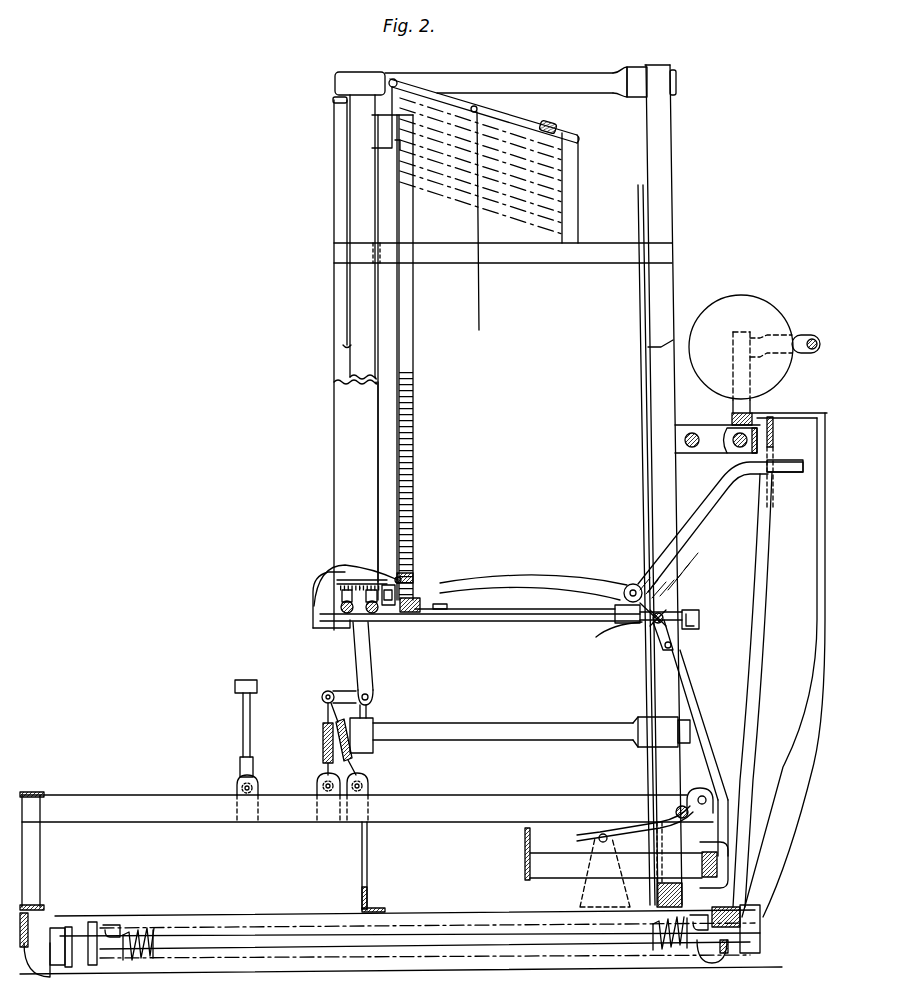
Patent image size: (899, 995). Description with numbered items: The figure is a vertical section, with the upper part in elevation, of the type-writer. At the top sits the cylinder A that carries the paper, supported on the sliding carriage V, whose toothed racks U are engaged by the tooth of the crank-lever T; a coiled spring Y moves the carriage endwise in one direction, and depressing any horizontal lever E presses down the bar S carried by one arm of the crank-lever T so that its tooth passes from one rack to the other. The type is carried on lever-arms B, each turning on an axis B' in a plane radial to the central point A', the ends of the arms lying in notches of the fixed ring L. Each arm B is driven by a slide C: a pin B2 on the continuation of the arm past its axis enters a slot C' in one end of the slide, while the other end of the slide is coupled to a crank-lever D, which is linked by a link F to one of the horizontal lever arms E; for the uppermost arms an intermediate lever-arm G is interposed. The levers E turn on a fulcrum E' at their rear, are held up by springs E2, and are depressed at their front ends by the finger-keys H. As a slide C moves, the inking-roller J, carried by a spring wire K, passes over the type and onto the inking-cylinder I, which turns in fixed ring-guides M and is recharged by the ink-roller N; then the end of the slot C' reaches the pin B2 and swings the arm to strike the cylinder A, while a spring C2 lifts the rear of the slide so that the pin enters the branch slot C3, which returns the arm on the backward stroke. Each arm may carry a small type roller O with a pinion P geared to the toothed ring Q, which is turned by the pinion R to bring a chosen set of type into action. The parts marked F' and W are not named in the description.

The cylinder A is at (754, 354).
The central point A' is at (536, 485).
The lever-arm B is at (533, 587).
The axis B' is at (711, 531).
The pin B2 is at (656, 628).
The slide C is at (649, 625).
The slot C' is at (672, 609).
The spring C2 is at (604, 634).
The branch slot C3 is at (680, 635).
The crank-lever D is at (392, 148).
The horizontal lever arm E is at (401, 884).
The fulcrum E' is at (700, 753).
The spring E2 is at (521, 812).
The link F is at (320, 762).
The inclined rod F' is at (349, 762).
The intermediate lever-arm G is at (484, 161).
The finger-key H is at (246, 739).
The inking-cylinder I is at (334, 188).
The inking-roller J is at (398, 576).
The spring wire K is at (313, 599).
The fixed ring L is at (414, 424).
The fixed ring-guide M is at (336, 253).
The ink-roller N is at (348, 536).
The type roller O is at (390, 596).
The pinion P is at (418, 592).
The toothed ring Q is at (405, 447).
The pinion R is at (404, 577).
The bar S is at (603, 854).
The crank-lever T is at (701, 689).
The toothed rack U is at (789, 460).
The sliding carriage V is at (733, 418).
The side wall W is at (783, 665).
The coiled spring Y is at (147, 962).